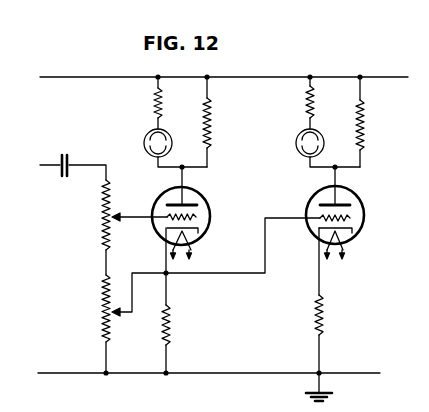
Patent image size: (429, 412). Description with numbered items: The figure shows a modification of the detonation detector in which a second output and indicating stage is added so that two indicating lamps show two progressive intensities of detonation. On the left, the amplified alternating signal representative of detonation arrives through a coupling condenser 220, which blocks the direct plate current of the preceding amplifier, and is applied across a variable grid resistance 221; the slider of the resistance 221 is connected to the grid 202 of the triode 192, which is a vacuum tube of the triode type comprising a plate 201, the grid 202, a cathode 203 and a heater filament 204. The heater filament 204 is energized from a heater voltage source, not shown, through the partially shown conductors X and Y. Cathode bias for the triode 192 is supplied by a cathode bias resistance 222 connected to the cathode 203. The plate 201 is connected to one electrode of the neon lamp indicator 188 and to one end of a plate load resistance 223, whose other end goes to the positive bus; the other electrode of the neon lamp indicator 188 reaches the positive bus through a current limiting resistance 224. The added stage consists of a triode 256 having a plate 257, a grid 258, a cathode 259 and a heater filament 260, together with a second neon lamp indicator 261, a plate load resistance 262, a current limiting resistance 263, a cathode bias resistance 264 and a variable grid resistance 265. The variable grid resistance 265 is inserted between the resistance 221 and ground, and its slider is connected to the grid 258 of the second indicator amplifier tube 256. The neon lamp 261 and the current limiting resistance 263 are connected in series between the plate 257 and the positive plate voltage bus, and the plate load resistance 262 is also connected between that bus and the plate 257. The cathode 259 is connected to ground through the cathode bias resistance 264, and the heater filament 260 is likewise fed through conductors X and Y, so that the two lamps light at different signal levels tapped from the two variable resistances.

The neon lamp indicator 188 is at (144, 143).
The vacuum tube 192 is at (186, 220).
The plate 201 is at (170, 191).
The grid 202 is at (197, 219).
The cathode 203 is at (200, 231).
The heater filament 204 is at (193, 241).
The coupling condenser 220 is at (65, 152).
The variable grid resistance 221 is at (103, 207).
The cathode bias resistance 222 is at (171, 315).
The plate load resistance 223 is at (210, 128).
The current limiting resistance 224 is at (154, 103).
The triode 256 is at (336, 220).
The plate 257 is at (326, 190).
The grid 258 is at (351, 220).
The cathode 259 is at (353, 231).
The heater filament 260 is at (344, 241).
The second neon lamp indicator 261 is at (296, 143).
The plate load resistance 262 is at (366, 129).
The current limiting resistance 263 is at (305, 103).
The cathode bias resistance 264 is at (323, 320).
The variable grid resistance 265 is at (104, 311).